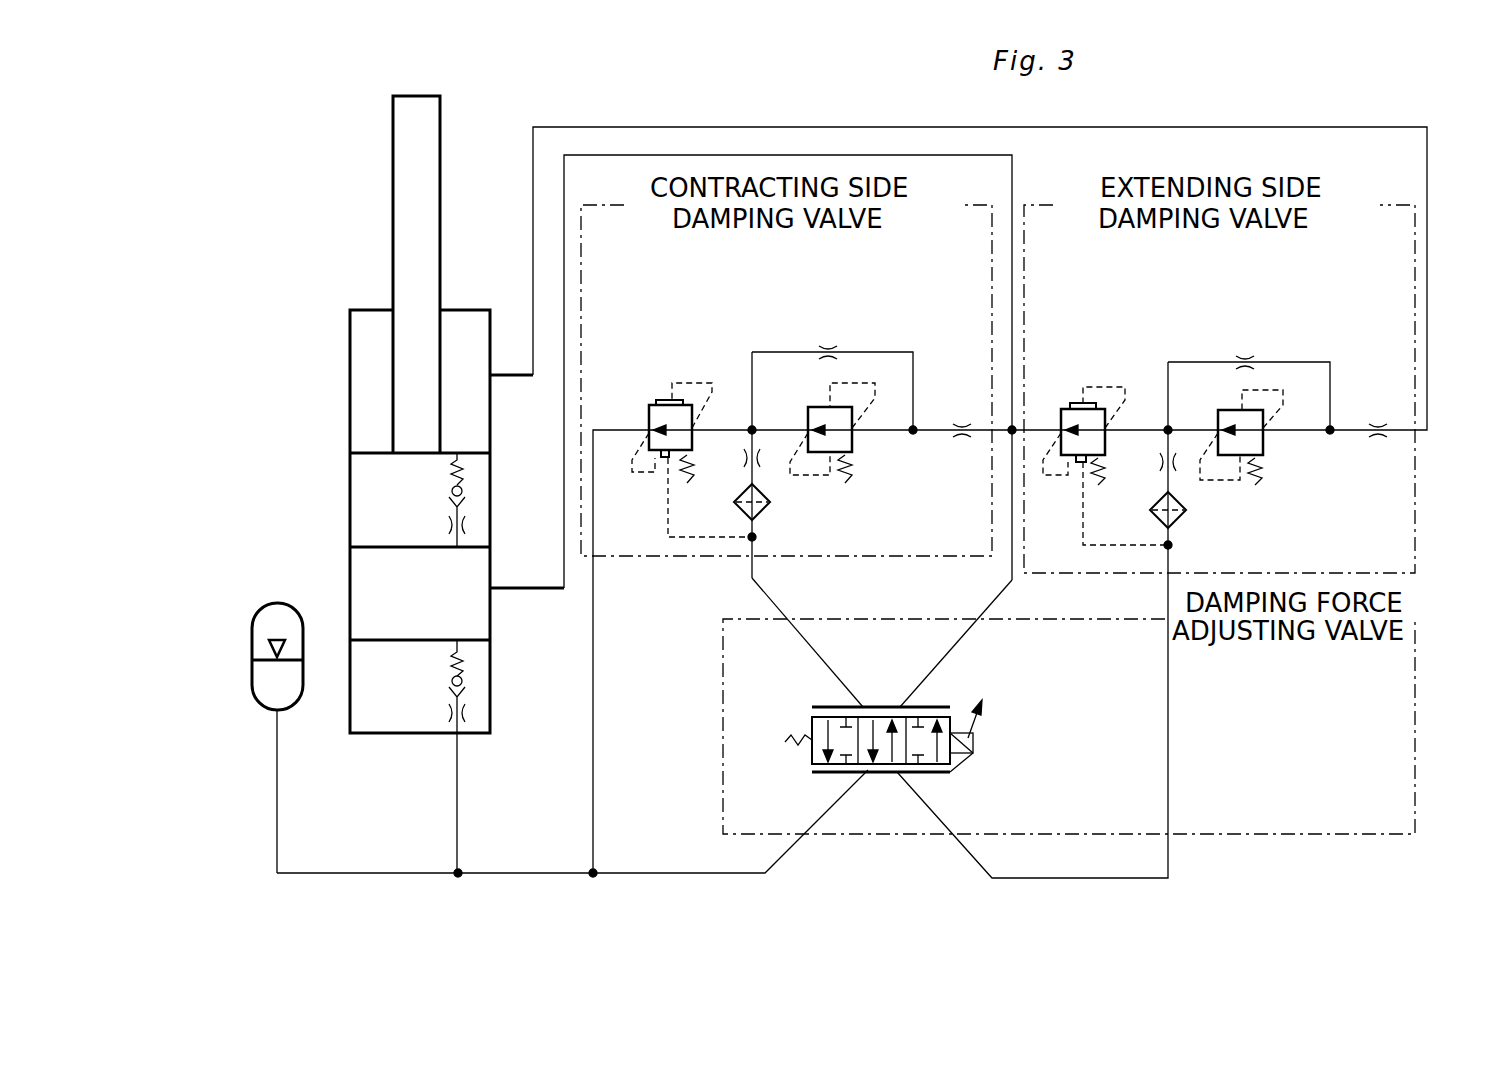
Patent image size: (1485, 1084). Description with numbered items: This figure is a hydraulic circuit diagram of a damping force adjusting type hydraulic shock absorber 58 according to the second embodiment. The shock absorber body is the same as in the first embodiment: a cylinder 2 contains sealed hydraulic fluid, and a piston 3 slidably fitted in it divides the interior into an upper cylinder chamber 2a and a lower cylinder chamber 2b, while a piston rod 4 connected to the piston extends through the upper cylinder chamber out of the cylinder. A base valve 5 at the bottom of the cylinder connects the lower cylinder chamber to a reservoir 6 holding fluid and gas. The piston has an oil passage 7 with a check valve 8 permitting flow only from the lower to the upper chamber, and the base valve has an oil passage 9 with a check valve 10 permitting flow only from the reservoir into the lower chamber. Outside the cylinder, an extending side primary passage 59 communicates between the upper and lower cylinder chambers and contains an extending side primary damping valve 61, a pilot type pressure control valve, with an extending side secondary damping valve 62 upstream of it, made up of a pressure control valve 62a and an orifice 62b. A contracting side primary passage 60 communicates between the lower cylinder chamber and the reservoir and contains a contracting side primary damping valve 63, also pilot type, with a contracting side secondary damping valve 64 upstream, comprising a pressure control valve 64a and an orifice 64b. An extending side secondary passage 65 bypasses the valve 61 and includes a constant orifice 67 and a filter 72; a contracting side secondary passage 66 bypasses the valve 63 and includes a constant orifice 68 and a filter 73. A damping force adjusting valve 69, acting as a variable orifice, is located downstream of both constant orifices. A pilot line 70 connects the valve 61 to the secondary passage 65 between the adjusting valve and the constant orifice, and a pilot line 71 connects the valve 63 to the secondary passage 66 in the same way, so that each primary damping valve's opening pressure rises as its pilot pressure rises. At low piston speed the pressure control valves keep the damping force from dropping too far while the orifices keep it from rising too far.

The damping force adjusting type hydraulic shock absorber 58 is at (352, 203).
The cylinder 2 is at (350, 327).
The upper cylinder chamber 2a is at (360, 370).
The lower cylinder chamber 2b is at (358, 592).
The piston 3 is at (355, 512).
The piston rod 4 is at (428, 126).
The base valve 5 is at (350, 727).
The reservoir 6 is at (253, 677).
The oil passage 7 is at (450, 537).
The check valve 8 is at (450, 485).
The oil passage 9 is at (468, 728).
The check valve 10 is at (468, 682).
The extending side primary passage 59 is at (800, 152).
The contracting side primary passage 60 is at (948, 436).
The extending side primary damping valve 61 is at (1068, 408).
The extending side secondary damping valve 62 is at (1311, 332).
The pressure control valve 62a is at (1265, 455).
The orifice 62b is at (1245, 356).
The contracting side primary damping valve 63 is at (652, 404).
The contracting side secondary damping valve 64 is at (870, 324).
The pressure control valve 64a is at (850, 455).
The orifice 64b is at (830, 346).
The extending side secondary passage 65 is at (966, 637).
The contracting side secondary passage 66 is at (752, 582).
The constant orifice 67 is at (1178, 462).
The constant orifice 68 is at (760, 458).
The damping force adjusting valve 69 is at (941, 774).
The pilot line 70 is at (1081, 504).
The pilot line 71 is at (660, 546).
The filter 72 is at (1182, 520).
The filter 73 is at (768, 516).